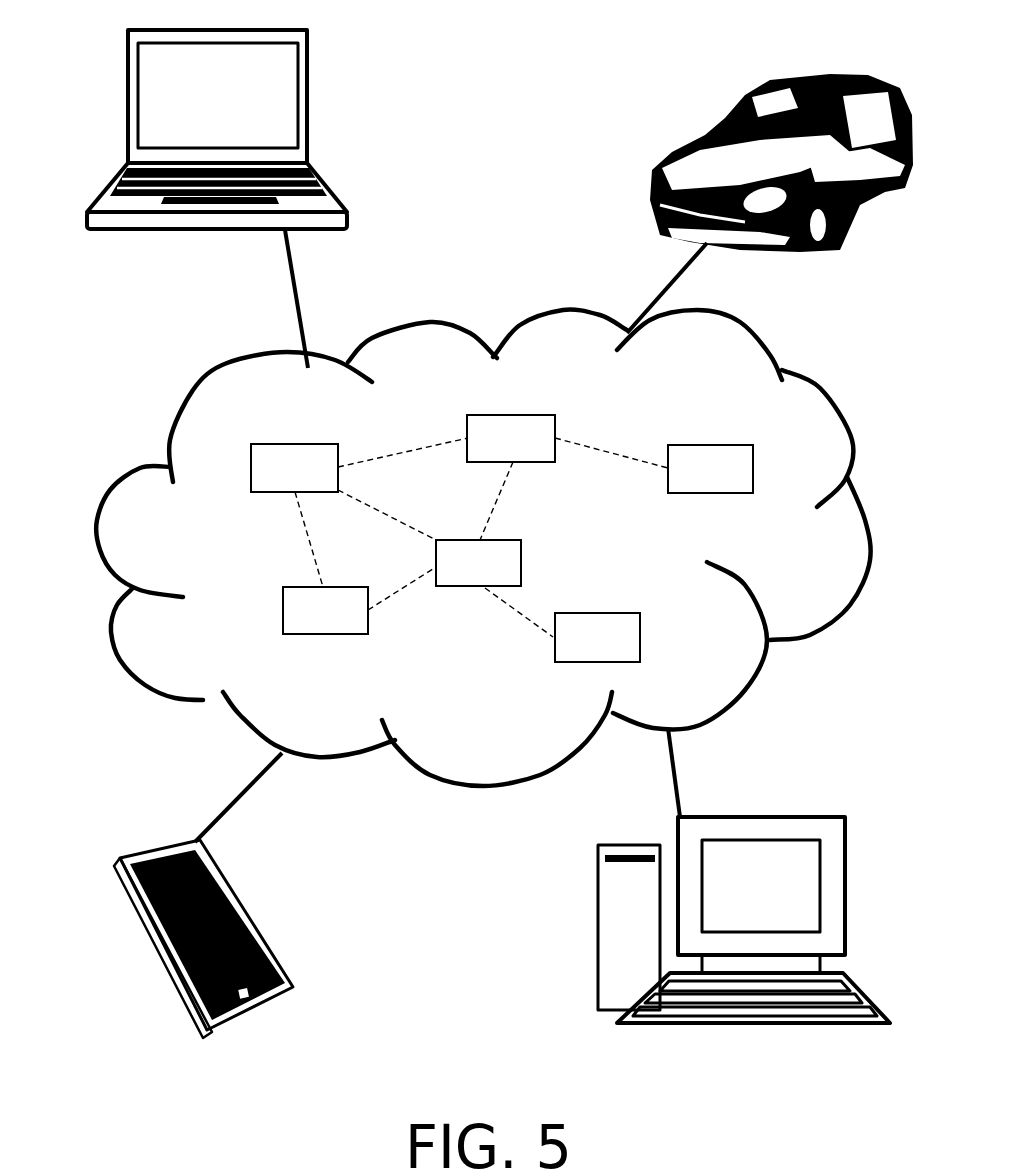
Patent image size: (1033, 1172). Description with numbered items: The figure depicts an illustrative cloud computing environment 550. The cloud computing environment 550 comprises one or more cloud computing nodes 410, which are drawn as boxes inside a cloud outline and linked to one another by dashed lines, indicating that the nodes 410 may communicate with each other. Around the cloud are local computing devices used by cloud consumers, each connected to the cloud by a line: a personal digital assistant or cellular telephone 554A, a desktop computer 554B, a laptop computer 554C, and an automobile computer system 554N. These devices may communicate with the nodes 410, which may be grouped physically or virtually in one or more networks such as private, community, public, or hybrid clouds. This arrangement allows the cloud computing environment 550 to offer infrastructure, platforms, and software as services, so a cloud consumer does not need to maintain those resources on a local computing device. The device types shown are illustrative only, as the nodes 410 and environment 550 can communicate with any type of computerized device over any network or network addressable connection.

The cloud computing environment 550 is at (162, 452).
The cloud computing nodes 410 is at (502, 538).
The personal digital assistant (PDA) or cellular telephone 554A is at (122, 862).
The desktop computer 554B is at (597, 973).
The laptop computer 554C is at (128, 115).
The automobile computer system 554N is at (660, 192).